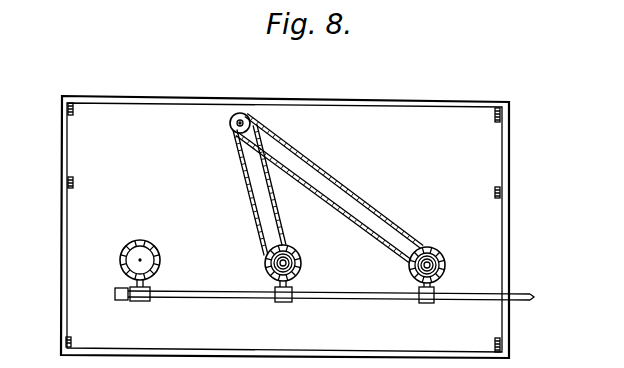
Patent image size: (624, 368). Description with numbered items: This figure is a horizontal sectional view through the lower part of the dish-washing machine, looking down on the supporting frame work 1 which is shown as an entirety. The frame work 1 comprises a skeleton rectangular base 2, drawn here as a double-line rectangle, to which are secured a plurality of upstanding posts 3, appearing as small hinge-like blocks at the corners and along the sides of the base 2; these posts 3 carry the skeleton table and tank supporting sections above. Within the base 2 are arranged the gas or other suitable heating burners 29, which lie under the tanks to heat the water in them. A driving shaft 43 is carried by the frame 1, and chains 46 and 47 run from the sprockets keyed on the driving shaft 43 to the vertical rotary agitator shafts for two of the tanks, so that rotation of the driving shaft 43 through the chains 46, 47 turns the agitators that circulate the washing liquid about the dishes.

The supporting frame work 1 is at (514, 119).
The skeleton rectangular base 2 is at (502, 159).
The upstanding posts 3 is at (71, 177).
The heating burners 29 is at (158, 252).
The driving shaft 43 is at (252, 124).
The chain 46 is at (352, 200).
The chain 47 is at (262, 213).